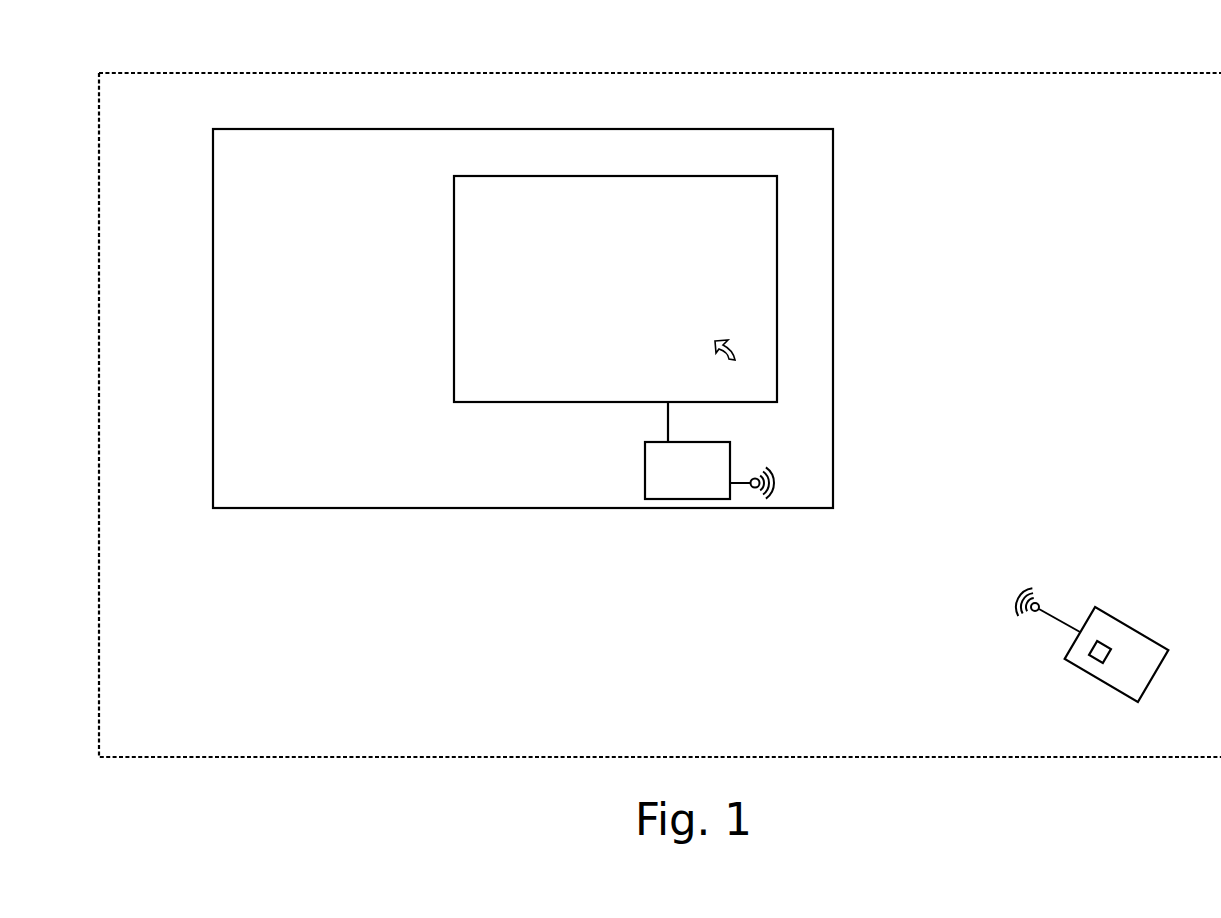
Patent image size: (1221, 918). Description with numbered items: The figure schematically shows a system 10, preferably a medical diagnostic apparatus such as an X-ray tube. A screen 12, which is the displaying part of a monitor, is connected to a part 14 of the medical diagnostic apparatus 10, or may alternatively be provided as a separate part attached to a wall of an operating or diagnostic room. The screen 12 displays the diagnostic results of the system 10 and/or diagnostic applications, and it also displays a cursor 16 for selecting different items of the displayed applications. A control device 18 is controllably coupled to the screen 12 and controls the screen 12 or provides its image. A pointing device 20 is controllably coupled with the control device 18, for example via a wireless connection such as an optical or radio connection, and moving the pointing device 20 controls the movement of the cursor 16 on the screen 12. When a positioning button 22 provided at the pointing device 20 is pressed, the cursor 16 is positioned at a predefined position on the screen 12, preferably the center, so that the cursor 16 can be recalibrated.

The system 10 is at (981, 63).
The screen 12 is at (454, 350).
The part of the medical diagnostic apparatus 14 is at (833, 254).
The cursor 16 is at (722, 337).
The control device 18 is at (689, 500).
The pointing device 20 is at (1131, 628).
The positioning button 22 is at (1095, 663).